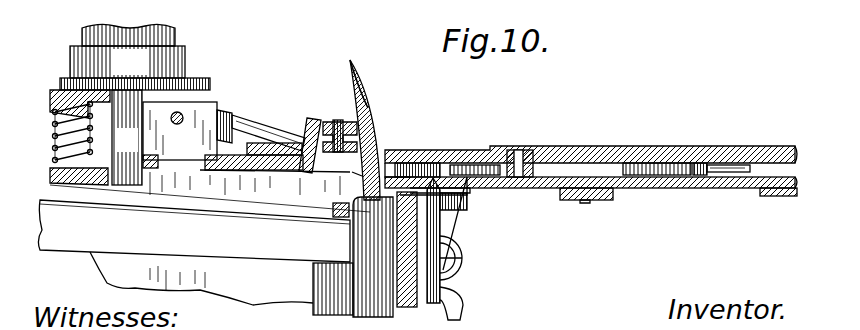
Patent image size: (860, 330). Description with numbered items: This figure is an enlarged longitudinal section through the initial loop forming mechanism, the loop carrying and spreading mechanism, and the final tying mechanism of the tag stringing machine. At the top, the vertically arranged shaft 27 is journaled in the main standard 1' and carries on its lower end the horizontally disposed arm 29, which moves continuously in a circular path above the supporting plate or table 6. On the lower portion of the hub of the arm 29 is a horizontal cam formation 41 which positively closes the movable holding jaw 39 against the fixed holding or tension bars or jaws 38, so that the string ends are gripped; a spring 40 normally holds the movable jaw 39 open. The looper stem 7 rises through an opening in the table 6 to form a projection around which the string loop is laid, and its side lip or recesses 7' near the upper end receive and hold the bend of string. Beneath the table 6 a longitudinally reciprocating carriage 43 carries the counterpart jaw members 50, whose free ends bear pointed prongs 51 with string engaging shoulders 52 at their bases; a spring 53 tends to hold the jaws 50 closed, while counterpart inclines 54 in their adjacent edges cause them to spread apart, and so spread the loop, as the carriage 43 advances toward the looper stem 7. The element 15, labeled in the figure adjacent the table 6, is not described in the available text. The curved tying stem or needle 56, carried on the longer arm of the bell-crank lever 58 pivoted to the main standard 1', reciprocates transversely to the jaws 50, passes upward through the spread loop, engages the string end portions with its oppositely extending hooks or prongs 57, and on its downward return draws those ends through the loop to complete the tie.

The horizontally disposed arm 29 is at (127, 51).
The horizontal cam formation 41 is at (62, 86).
The spring 40 is at (58, 122).
The vertically arranged shaft 27 is at (127, 137).
The movable holding jaw 39 is at (313, 120).
The fixed holding or tension bars or jaws 38 is at (337, 120).
The oppositely extending hooks or prongs 57 is at (370, 107).
The tying stem or needle 56 is at (372, 130).
The pointed prongs 51 is at (357, 173).
The sleeve 15 is at (443, 148).
The string engaging shoulders 52 is at (517, 162).
The supporting plate or table 6 is at (580, 151).
The bell-crank lever 58 is at (194, 231).
The side lip or recesses 7' is at (464, 210).
The counterpart inclines 54 is at (547, 186).
The counterpart jaw members 50 is at (620, 189).
The longitudinally reciprocating carriage 43 is at (643, 186).
The spring 53 is at (722, 176).
The looper stem 7 is at (454, 249).
The main standard 1' is at (201, 287).